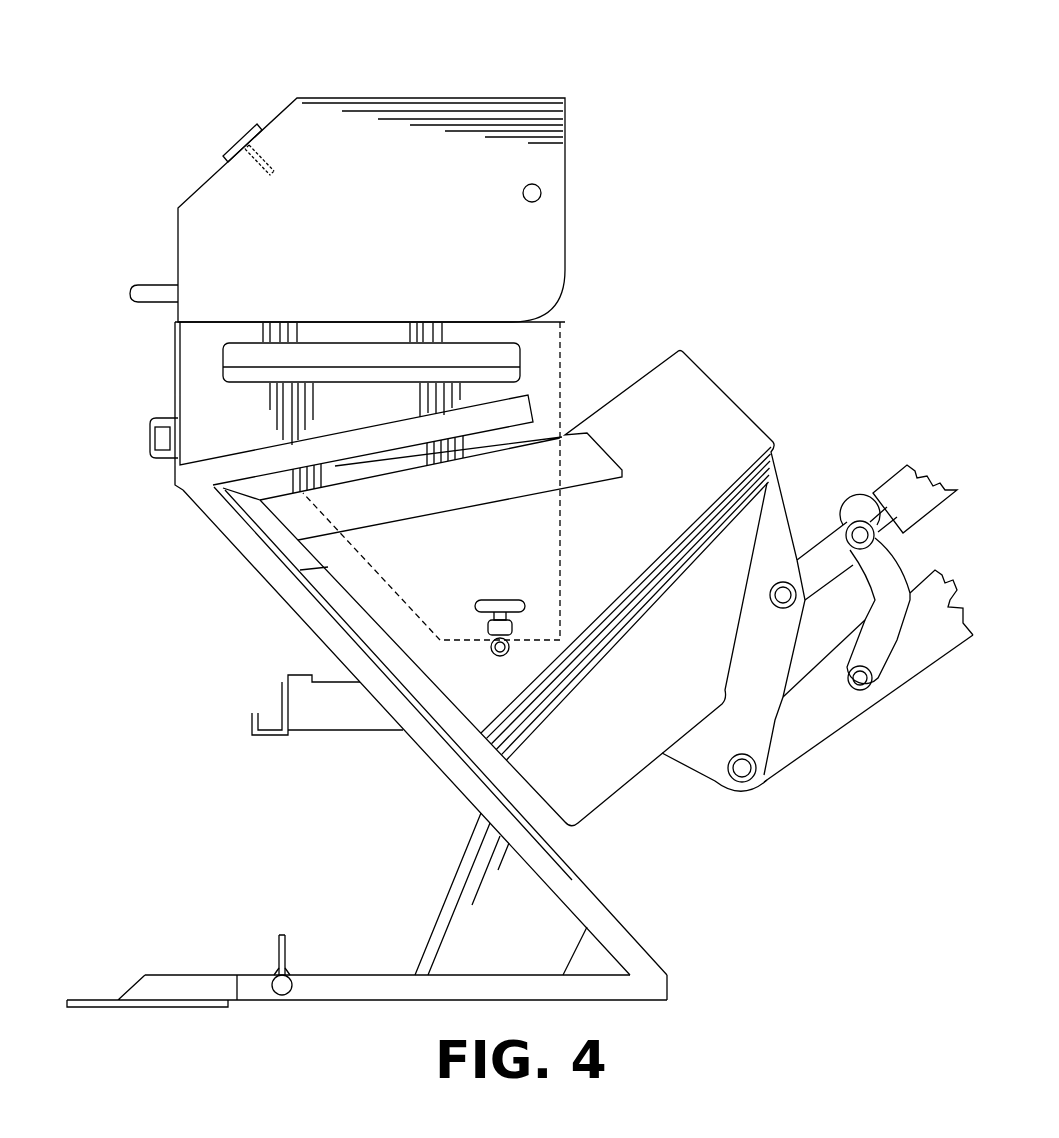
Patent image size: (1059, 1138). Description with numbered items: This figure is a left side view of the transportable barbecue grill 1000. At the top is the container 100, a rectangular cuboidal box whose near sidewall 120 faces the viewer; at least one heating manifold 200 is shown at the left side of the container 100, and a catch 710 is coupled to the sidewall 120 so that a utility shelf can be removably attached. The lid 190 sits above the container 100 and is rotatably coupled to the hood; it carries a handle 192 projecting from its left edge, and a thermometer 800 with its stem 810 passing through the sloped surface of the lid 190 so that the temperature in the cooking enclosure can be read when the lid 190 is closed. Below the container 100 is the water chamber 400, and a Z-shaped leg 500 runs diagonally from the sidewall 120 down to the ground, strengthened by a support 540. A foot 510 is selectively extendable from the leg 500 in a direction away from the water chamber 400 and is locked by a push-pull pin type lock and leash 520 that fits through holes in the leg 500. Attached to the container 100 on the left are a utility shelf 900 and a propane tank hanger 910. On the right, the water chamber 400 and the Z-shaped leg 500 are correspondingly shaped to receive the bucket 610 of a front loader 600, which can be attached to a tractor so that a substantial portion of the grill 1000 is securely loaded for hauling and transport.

The transportable barbecue grill 1000 is at (503, 70).
The lid 190 is at (433, 98).
The thermometer 800 is at (232, 137).
The stem 810 is at (270, 163).
The handle 192 is at (130, 293).
The container 100 is at (345, 320).
The catch 710 is at (386, 341).
The heating manifold 200 is at (167, 386).
The sidewall 120 is at (545, 362).
The water chamber 400 is at (565, 556).
The bucket 610 is at (620, 793).
The front loader 600 is at (872, 720).
The utility shelf 900 is at (250, 718).
The propane tank hanger 910 is at (345, 733).
The Z-shaped leg 500 is at (630, 918).
The foot 510 is at (92, 1000).
The push-pull pin type lock and leash 520 is at (288, 933).
The support 540 is at (452, 890).